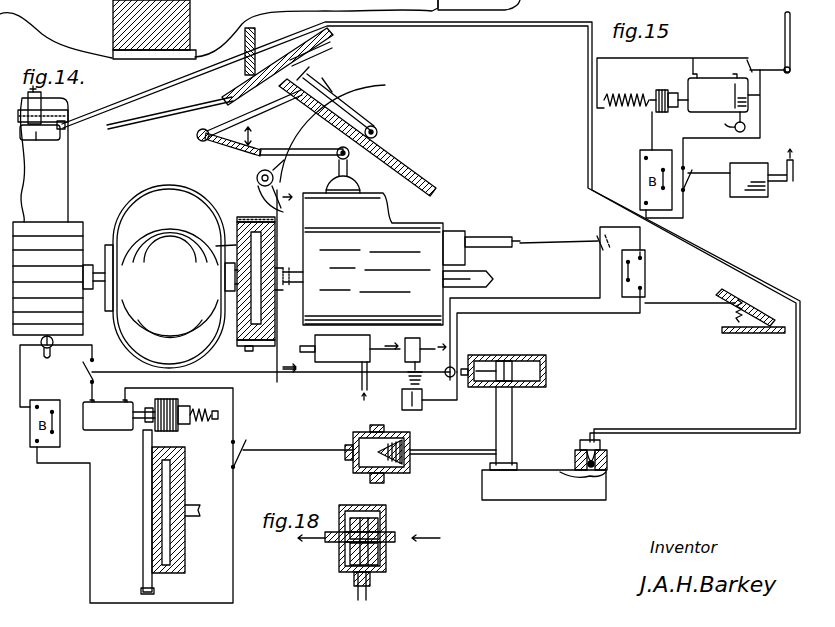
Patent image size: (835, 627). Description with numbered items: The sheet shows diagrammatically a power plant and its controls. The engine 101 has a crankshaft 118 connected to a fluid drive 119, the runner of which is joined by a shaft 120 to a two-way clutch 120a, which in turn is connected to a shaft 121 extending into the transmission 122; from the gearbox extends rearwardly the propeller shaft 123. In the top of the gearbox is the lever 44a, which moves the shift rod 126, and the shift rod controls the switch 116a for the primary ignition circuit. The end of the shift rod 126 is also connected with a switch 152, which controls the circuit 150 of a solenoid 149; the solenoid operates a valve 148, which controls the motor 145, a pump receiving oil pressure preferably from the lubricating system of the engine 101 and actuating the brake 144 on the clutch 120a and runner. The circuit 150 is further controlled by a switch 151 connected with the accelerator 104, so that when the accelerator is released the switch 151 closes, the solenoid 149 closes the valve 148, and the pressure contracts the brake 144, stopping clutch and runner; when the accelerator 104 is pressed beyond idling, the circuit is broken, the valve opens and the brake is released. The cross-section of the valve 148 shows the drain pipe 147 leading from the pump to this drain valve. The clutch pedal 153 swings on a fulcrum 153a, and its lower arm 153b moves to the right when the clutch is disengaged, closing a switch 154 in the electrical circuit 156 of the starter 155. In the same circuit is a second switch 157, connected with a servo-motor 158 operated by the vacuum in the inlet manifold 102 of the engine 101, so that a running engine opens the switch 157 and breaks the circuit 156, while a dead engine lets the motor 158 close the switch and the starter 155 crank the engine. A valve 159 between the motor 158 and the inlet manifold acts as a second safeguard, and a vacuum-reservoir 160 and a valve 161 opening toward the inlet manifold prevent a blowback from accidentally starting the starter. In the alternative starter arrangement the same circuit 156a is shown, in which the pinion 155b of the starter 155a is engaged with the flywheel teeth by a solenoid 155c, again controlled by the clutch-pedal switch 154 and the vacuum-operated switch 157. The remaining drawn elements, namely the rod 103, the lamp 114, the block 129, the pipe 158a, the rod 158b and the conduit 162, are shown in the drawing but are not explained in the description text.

In FIG. 14, the engine 101 is at (44, 160).
In FIG. 14, the inlet manifold 102 is at (40, 140).
In FIG. 14, the throttle rod 103 is at (169, 120).
In FIG. 14, the accelerator 104 is at (350, 113).
In FIG. 14, the signal lamp 114 is at (43, 354).
In FIG. 15, the signal lamp 114 is at (722, 123).
In FIG. 14, the switch 116a is at (465, 240).
In FIG. 14, the crankshaft 118 is at (100, 270).
In FIG. 14, the fluid drive 119 is at (161, 276).
In FIG. 14, the shaft 120 is at (224, 278).
In FIG. 14, the two-way clutch 120a is at (186, 456).
In FIG. 14, the shaft 121 is at (300, 281).
In FIG. 14, the transmission 122 is at (442, 222).
In FIG. 14, the propeller shaft 123 is at (478, 270).
In FIG. 14, the shift rod 126 is at (520, 242).
In FIG. 14, the block 129 is at (190, 32).
In FIG. 14, the brake 144 is at (252, 218).
In FIG. 14, the motor 145 is at (350, 367).
In FIG. 18, the drain pipe 147 is at (388, 540).
In FIG. 14, the valve 148 is at (408, 337).
In FIG. 18, the valve 148 is at (388, 522).
In FIG. 14, the solenoid 149 is at (403, 398).
In FIG. 14, the circuit 150 is at (642, 322).
In FIG. 14, the switch 151 is at (648, 307).
In FIG. 14, the switch 152 is at (610, 235).
In FIG. 14, the clutch pedal 153 is at (335, 92).
In FIG. 15, the clutch pedal 153 is at (784, 38).
In FIG. 14, the fulcrum 153a is at (257, 178).
In FIG. 14, the lower arm 153b is at (280, 378).
In FIG. 14, the switch 154 is at (84, 380).
In FIG. 15, the switch 154 is at (745, 66).
In FIG. 14, the starter 155 is at (100, 432).
In FIG. 15, the starter 155a is at (690, 84).
In FIG. 15, the pinion 155b is at (664, 112).
In FIG. 15, the solenoid 155c is at (617, 106).
In FIG. 14, the electrical circuit 156 is at (90, 344).
In FIG. 15, the circuit 156a is at (672, 72).
In FIG. 14, the switch 157 is at (240, 462).
In FIG. 15, the switch 157 is at (687, 190).
In FIG. 14, the servo-motor 158 is at (402, 424).
In FIG. 15, the servo-motor 158 is at (752, 192).
In FIG. 14, the pipe 158a is at (453, 435).
In FIG. 15, the pipe 158a is at (785, 188).
In FIG. 14, the rod 158b is at (516, 420).
In FIG. 14, the valve 159 is at (488, 354).
In FIG. 14, the vacuum-reservoir 160 is at (533, 500).
In FIG. 14, the valve 161 is at (607, 458).
In FIG. 14, the conduit 162 is at (563, 27).
In FIG. 14, the lever 44a is at (350, 170).